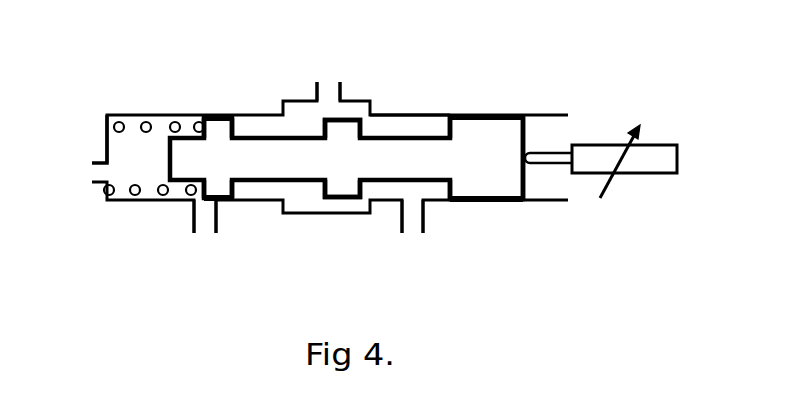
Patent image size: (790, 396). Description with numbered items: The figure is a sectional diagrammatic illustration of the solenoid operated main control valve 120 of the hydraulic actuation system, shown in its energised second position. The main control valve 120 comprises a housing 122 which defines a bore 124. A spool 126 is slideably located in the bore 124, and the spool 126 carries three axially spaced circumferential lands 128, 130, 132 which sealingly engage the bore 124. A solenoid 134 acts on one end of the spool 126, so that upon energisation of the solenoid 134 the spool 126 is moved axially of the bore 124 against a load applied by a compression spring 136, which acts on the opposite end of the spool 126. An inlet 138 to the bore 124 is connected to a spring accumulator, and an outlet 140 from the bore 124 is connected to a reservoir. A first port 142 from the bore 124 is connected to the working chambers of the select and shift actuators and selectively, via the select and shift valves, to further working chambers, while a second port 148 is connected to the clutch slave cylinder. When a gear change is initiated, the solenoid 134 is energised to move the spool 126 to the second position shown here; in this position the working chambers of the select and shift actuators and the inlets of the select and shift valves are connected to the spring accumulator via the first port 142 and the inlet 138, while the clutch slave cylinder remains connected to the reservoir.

The main control valve 120 is at (509, 115).
The housing 122 is at (507, 203).
The bore 124 is at (408, 125).
The spool 126 is at (525, 183).
The land 128 is at (510, 138).
The land 130 is at (343, 192).
The land 132 is at (220, 123).
The solenoid 134 is at (633, 167).
The compression spring 136 is at (147, 123).
The inlet 138 is at (330, 88).
The outlet 140 is at (95, 162).
The first port 142 is at (413, 217).
The second port 148 is at (207, 218).